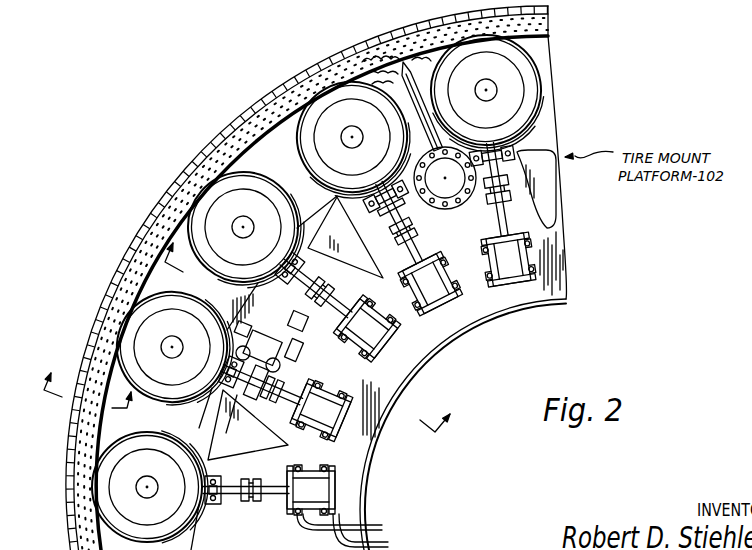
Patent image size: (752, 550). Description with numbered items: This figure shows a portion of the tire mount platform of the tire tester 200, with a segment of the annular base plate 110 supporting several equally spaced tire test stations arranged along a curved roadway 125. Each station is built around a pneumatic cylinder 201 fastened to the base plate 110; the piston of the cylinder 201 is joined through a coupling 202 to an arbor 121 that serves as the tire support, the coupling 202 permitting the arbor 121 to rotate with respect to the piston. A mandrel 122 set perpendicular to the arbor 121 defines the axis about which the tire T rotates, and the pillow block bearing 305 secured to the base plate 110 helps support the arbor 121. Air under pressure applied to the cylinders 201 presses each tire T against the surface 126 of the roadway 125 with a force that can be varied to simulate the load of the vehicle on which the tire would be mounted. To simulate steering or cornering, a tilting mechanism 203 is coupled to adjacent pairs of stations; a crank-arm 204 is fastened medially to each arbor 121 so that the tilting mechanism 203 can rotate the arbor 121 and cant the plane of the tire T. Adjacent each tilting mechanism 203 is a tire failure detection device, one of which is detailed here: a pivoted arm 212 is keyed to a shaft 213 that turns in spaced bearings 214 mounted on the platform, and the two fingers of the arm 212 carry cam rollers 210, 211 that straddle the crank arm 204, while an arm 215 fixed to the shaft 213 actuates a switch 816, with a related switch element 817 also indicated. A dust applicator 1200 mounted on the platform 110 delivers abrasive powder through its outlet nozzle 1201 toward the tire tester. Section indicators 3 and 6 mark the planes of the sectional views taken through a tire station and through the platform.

The tire mounting assembly 200 is at (406, 279).
The tire T is at (342, 288).
The outlet nozzle 1201 is at (362, 55).
The dust applicator 1200 is at (441, 206).
The surface 126 is at (200, 157).
The roadway 125 is at (142, 223).
The annular base plate 110 is at (565, 252).
The pillow block bearing 305 is at (306, 250).
The tilting mechanism 203 is at (365, 249).
The bearings 214 is at (250, 306).
The shaft 213 is at (258, 312).
The crank-arm 204 is at (297, 300).
The pivoted arm 212 is at (291, 318).
The switch 816 is at (305, 310).
The nut 817 is at (305, 328).
The cam roller 211 is at (277, 366).
The arm 215 is at (314, 344).
The cam roller 210 is at (197, 400).
The section line 6 is at (82, 381).
The section line 3 is at (315, 337).
The mandrel 122 is at (144, 488).
The arbor 121 is at (222, 508).
The coupling 202 is at (248, 505).
The pneumatic cylinder 201 is at (338, 477).